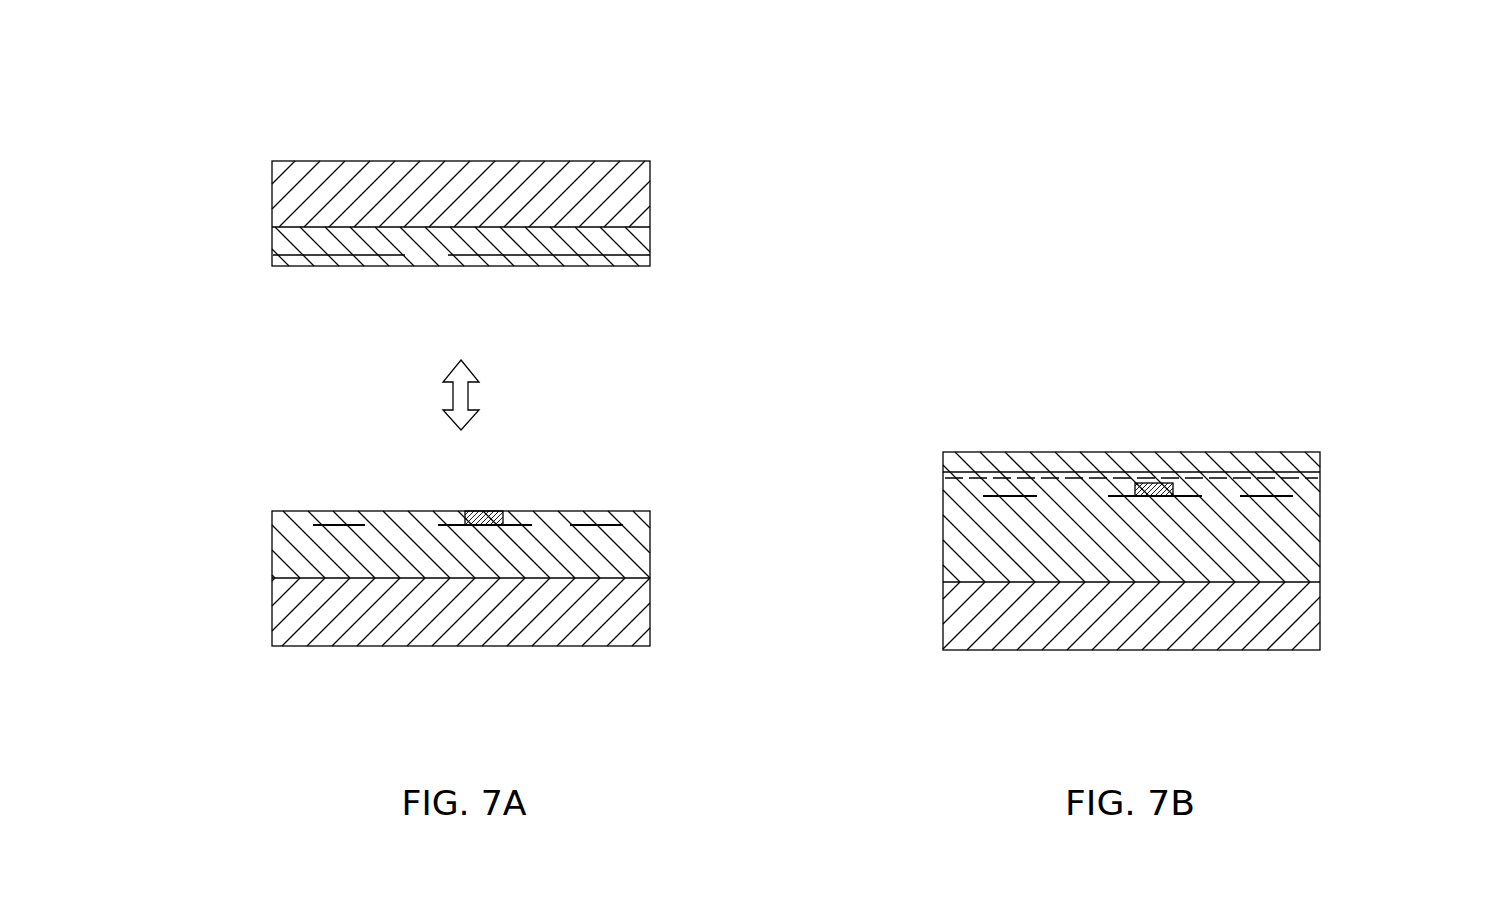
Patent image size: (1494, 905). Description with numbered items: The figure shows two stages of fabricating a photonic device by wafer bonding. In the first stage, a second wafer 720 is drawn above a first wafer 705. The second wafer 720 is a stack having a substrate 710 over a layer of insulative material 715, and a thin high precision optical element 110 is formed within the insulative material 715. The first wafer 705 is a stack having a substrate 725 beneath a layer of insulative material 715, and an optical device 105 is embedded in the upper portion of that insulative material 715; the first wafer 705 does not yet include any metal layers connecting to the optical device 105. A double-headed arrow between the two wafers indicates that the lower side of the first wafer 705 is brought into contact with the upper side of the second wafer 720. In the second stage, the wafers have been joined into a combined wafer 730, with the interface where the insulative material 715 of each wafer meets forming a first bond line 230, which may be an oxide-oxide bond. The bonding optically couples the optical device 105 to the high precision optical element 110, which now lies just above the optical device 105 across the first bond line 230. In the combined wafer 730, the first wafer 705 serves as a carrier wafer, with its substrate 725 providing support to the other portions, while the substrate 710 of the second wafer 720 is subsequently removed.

In FIG. 7A, the second wafer 720 is at (307, 119).
In FIG. 7A, the substrate 710 is at (630, 188).
In FIG. 7A, the insulative material 715 is at (283, 210).
In FIG. 7B, the insulative material 715 is at (945, 552).
In FIG. 7A, the high precision optical element 110 is at (605, 257).
In FIG. 7B, the high precision optical element 110 is at (1000, 475).
In FIG. 7A, the optical device 105 is at (491, 498).
In FIG. 7B, the optical device 105 is at (1161, 469).
In FIG. 7A, the substrate 725 is at (641, 609).
In FIG. 7B, the substrate 725 is at (1321, 610).
In FIG. 7A, the first wafer 705 is at (250, 618).
In FIG. 7B, the combined wafer 730 is at (927, 384).
In FIG. 7B, the first bond line 230 is at (1302, 478).